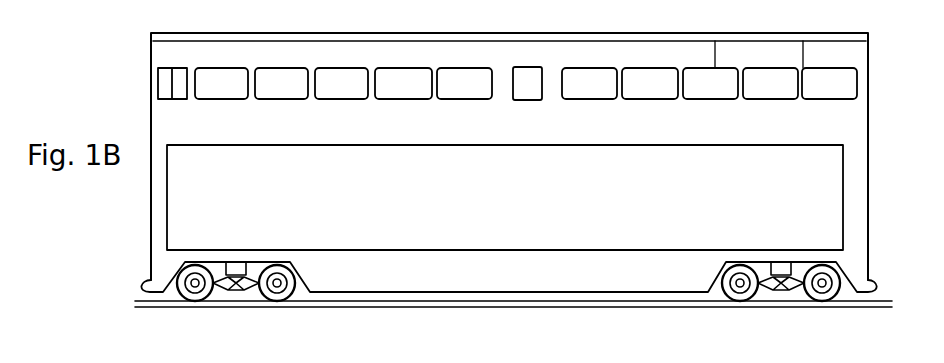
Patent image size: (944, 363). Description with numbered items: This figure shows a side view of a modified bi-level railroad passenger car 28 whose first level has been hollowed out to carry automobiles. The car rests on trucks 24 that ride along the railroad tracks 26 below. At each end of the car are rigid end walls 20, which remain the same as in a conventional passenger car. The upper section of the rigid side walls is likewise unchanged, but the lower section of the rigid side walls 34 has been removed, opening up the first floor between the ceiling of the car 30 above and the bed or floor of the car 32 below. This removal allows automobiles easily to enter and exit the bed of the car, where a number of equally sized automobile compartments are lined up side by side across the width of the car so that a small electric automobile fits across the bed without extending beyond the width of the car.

The rigid end walls 20 is at (152, 197).
The trucks 24 is at (238, 291).
The railroad tracks 26 is at (162, 296).
The modified bi-level railroad passenger car 28 is at (530, 99).
The ceiling of car (first floor) 30 is at (520, 198).
The bed or floor of car (first floor) 32 is at (525, 250).
The rigid side walls of car removed (first floor hollowed out) 34 is at (523, 198).